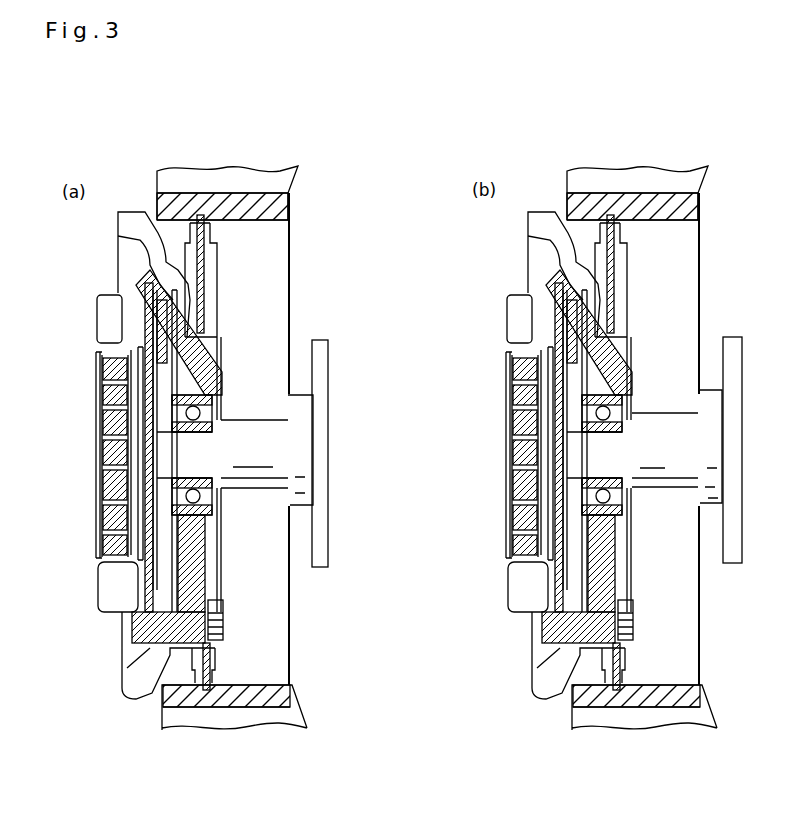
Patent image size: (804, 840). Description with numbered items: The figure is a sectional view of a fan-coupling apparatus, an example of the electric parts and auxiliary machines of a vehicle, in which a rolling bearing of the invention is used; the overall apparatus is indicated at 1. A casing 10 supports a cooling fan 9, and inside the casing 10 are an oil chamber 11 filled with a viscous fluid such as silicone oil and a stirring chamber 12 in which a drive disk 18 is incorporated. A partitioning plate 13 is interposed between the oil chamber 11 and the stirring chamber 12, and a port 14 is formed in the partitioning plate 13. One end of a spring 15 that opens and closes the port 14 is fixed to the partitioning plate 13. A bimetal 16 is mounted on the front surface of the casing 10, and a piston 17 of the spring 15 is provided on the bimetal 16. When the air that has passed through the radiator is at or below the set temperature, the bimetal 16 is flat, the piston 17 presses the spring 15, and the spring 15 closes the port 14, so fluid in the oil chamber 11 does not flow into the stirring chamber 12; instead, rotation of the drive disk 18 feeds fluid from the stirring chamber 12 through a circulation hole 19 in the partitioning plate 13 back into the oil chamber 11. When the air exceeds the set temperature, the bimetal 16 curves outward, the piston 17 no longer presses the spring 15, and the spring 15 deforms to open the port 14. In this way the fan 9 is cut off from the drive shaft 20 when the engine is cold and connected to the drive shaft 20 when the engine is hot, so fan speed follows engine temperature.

The clutch device 1 is at (223, 400).
The cooling fan 9 is at (270, 188).
The casing 10 is at (112, 277).
The oil chamber 11 is at (138, 347).
The stirring chamber 12 is at (100, 532).
The partitioning plate 13 is at (140, 425).
The port 14 is at (140, 357).
The spring 15 is at (140, 384).
The bimetal 16 is at (100, 488).
The piston 17 is at (135, 460).
The drive disk 18 is at (187, 332).
The circulation hole 19 is at (98, 305).
The drive shaft 20 is at (255, 440).